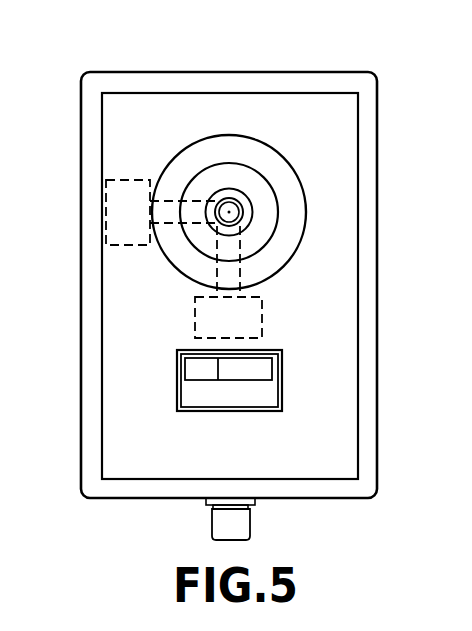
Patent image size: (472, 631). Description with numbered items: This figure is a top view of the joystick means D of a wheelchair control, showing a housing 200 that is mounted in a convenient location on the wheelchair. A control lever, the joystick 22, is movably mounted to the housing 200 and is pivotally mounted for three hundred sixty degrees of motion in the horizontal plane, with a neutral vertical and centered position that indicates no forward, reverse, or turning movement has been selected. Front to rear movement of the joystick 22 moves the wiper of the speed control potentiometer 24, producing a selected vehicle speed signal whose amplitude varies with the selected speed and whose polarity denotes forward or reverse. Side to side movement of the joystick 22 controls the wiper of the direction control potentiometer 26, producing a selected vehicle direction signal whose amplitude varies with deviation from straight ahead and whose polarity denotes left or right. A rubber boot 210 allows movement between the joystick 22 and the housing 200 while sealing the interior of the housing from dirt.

The joystick means D is at (262, 61).
The housing 200 is at (368, 420).
The rubber boot 210 is at (288, 214).
The control lever 22 is at (234, 205).
The direction control potentiometer 26 is at (125, 246).
The speed control potentiometer 24 is at (262, 309).